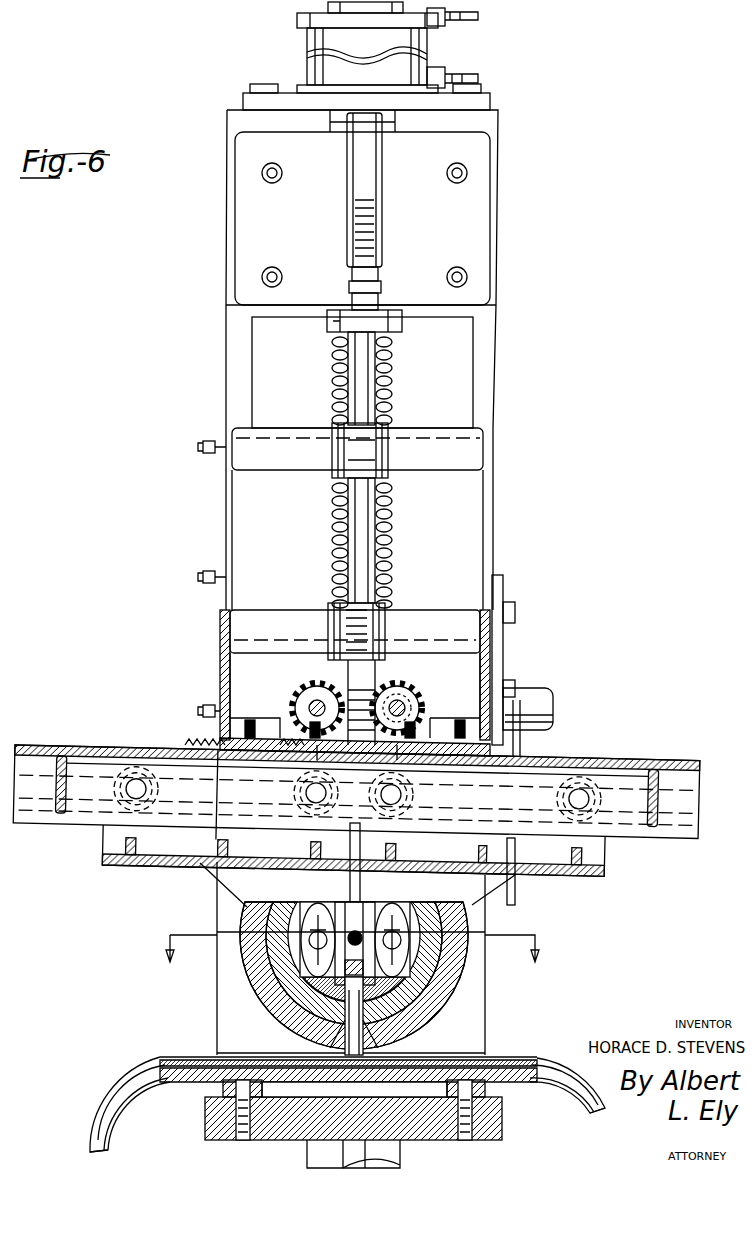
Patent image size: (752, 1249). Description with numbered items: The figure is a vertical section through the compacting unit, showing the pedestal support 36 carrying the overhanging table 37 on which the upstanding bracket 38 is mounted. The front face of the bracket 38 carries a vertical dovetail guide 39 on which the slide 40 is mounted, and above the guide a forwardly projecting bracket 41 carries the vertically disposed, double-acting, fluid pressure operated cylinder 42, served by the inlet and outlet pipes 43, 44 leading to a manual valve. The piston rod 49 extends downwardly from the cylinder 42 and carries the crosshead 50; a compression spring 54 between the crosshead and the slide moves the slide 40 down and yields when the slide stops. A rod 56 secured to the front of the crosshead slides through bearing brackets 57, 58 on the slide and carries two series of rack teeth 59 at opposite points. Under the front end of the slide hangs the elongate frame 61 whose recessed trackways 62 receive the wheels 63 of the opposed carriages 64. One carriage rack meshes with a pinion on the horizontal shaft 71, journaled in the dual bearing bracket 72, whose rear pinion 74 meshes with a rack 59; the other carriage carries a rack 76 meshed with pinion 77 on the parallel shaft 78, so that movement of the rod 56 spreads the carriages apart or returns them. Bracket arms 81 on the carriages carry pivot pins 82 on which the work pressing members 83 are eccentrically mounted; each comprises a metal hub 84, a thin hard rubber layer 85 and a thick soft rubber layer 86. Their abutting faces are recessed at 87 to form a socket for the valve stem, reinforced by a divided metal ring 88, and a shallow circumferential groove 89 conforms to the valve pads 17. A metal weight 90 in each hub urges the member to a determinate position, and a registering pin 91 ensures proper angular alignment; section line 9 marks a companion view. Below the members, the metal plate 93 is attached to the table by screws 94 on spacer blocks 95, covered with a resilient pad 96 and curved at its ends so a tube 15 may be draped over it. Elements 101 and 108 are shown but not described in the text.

The section line 9- 9 is at (352, 940).
The tube 15 is at (94, 1103).
The valve pads 17 is at (351, 958).
The pedestal support 36 is at (400, 1160).
The overhanging table 37 is at (205, 1120).
The upstanding bracket 38 is at (497, 355).
The vertical dovetail guide 39 is at (473, 390).
The slide 40 is at (470, 458).
The forwardly projecting bracket 41 is at (498, 195).
The fluid pressure operated cylinder 42 is at (307, 36).
The inlet and outlet pipe 43 is at (470, 72).
The inlet and outlet pipe 44 is at (455, 20).
The piston rod 49 is at (347, 192).
The crosshead 50 is at (330, 328).
The compression spring 54 is at (345, 518).
The rod 56 is at (350, 362).
The bearing bracket 57 is at (392, 435).
The bearing bracket 58 is at (385, 625).
The rack teeth 59 is at (332, 588).
The elongate frame 61 is at (626, 760).
The recessed trackways 62 is at (700, 798).
The wheels 63 is at (158, 758).
The carriages 64 is at (150, 862).
The horizontal shaft 71 is at (406, 708).
The dual bearing bracket 72 is at (408, 690).
The pinion 74 is at (412, 700).
The rack 76 is at (220, 722).
The pinion 77 is at (305, 688).
The horizontal shaft 78 is at (309, 705).
The bracket arms 81 is at (222, 886).
The pivot pin 82 is at (300, 950).
The work pressing member 83 is at (230, 918).
The hub portion 84 is at (290, 950).
The hard rubber composition layer 85 is at (270, 970).
The resilient soft rubber layer 86 is at (262, 998).
The radial recess 87 is at (265, 1005).
The divided metal ring 88 is at (345, 1040).
The circumferential groove 89 is at (365, 1042).
The metal weight 90 is at (325, 905).
The registering pin 91 is at (360, 905).
The metal plate 93 is at (553, 1090).
The screws 94 is at (240, 1135).
The spacer blocks 95 is at (223, 1088).
The pad 96 is at (592, 1112).
The boss 101 is at (522, 745).
The side plate 108 is at (503, 650).